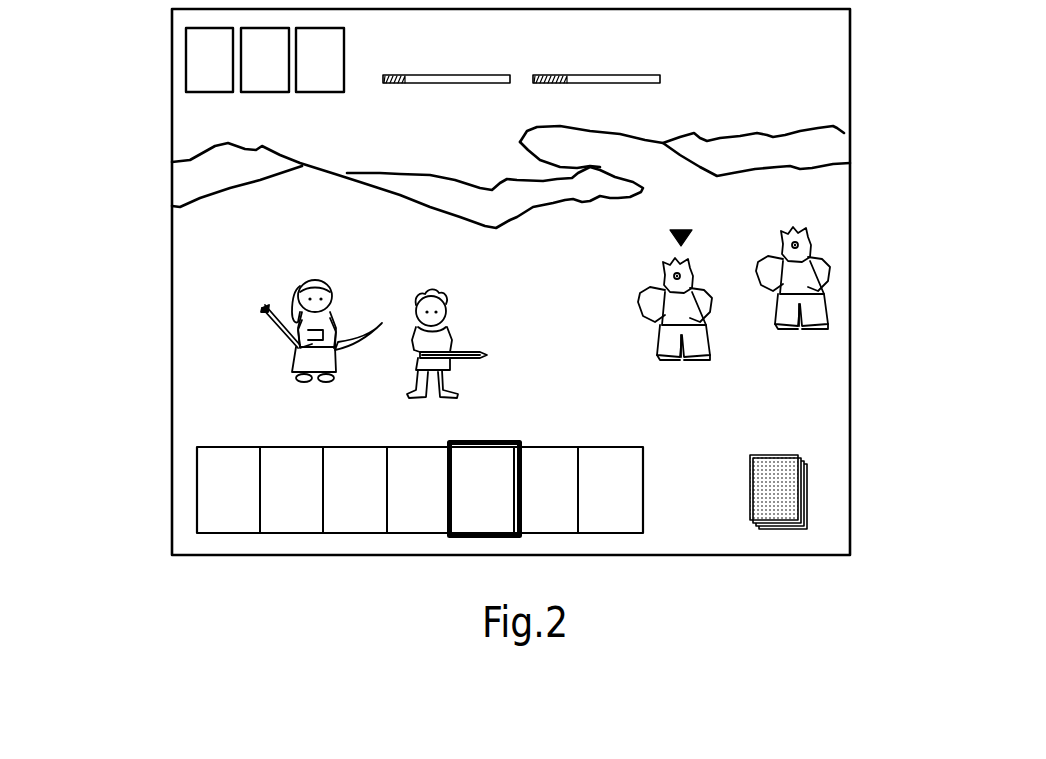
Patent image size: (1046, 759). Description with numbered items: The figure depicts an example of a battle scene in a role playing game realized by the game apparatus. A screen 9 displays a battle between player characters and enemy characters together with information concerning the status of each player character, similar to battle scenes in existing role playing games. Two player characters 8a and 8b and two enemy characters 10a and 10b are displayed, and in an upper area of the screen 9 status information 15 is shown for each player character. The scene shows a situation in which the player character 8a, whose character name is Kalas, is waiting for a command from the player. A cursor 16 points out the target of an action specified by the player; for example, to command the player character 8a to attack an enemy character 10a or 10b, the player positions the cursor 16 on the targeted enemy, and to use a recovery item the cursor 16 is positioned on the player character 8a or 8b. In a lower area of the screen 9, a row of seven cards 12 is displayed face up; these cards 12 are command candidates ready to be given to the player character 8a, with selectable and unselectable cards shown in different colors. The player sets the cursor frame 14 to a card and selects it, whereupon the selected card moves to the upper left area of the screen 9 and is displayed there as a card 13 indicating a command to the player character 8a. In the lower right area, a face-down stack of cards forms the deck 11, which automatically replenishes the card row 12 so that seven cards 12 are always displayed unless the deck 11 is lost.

The screen 9 is at (850, 52).
The card 13 is at (186, 61).
The status information 15 is at (633, 53).
The player character 8a is at (453, 342).
The player character 8b is at (323, 277).
The enemy character 10a is at (692, 360).
The enemy character 10b is at (802, 330).
The cursor 16 is at (687, 227).
The cards 12 is at (197, 485).
The cursor frame 14 is at (490, 440).
The deck 11 is at (805, 493).